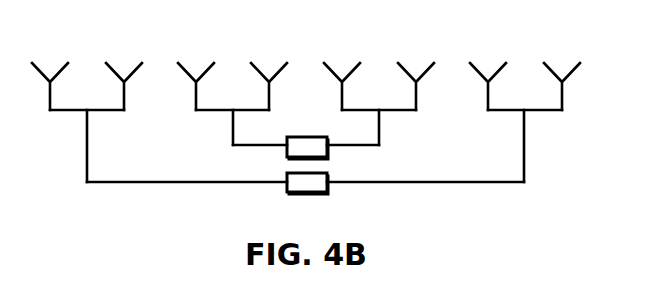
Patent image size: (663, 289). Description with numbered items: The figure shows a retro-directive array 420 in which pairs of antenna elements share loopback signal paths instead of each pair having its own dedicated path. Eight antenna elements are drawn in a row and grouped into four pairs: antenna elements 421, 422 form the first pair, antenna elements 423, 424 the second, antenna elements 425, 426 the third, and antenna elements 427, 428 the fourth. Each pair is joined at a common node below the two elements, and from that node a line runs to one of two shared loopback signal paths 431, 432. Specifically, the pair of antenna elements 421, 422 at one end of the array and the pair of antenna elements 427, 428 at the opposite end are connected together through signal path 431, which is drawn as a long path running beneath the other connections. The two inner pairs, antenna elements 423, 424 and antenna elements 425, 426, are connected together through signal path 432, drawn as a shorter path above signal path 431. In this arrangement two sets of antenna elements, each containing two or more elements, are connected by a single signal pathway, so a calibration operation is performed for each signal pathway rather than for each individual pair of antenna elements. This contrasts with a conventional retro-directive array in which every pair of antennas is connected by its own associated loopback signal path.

The retro-directive array 420 is at (289, 38).
The antenna element 421 is at (37, 86).
The antenna element 422 is at (110, 86).
The antenna element 423 is at (184, 86).
The antenna element 424 is at (256, 86).
The antenna element 425 is at (330, 86).
The antenna element 426 is at (402, 86).
The antenna element 427 is at (475, 86).
The antenna element 428 is at (548, 86).
The loopback signal path 431 is at (285, 187).
The loopback signal path 432 is at (288, 149).